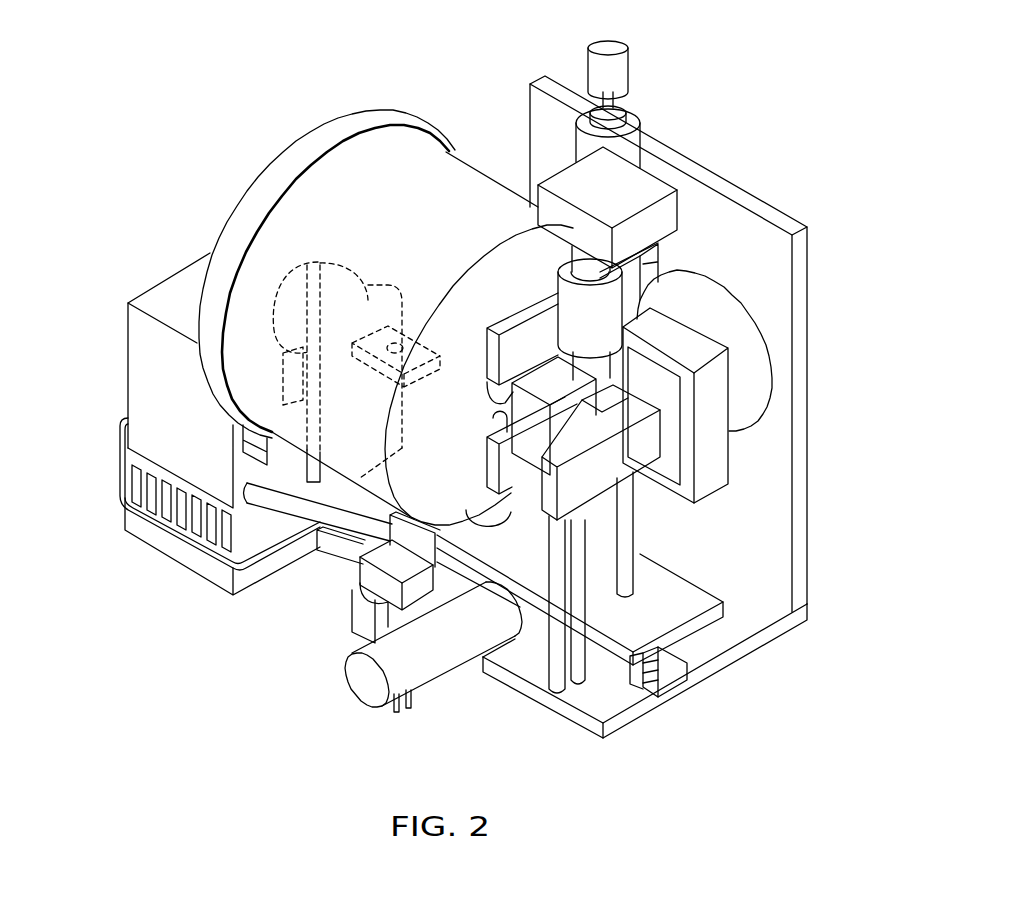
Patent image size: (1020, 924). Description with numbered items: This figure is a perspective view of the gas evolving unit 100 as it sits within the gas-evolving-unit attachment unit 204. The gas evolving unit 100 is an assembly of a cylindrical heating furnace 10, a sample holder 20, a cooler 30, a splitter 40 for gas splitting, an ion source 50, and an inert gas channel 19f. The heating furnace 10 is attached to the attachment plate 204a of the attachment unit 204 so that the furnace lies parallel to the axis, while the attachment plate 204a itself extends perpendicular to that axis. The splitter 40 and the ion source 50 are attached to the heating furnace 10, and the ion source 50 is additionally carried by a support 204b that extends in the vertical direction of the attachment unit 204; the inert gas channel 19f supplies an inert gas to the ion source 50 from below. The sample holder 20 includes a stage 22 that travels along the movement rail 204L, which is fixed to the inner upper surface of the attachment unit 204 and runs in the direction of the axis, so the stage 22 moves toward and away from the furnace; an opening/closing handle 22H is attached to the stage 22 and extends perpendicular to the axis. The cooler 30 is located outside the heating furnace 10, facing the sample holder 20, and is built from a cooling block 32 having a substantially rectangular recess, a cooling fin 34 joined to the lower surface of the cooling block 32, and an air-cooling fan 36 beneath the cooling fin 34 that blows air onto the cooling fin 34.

The gas evolving unit 100 is at (775, 60).
The heating furnace 10 is at (420, 160).
The sample holder 20 is at (315, 262).
The cooler 30 is at (57, 413).
The cooling block 32 is at (133, 400).
The cooling fin 34 is at (132, 477).
The air-cooling fan 36 is at (128, 522).
The splitter 40 is at (588, 390).
The ion source 50 is at (717, 390).
The inert gas channel 19f is at (633, 575).
The stage 22 is at (650, 697).
The opening/closing handle 22H is at (410, 683).
The gas-evolving-unit attachment unit 204 is at (758, 643).
The attachment plate 204a is at (645, 255).
The support 204b is at (560, 695).
The movement rail 204L is at (675, 672).